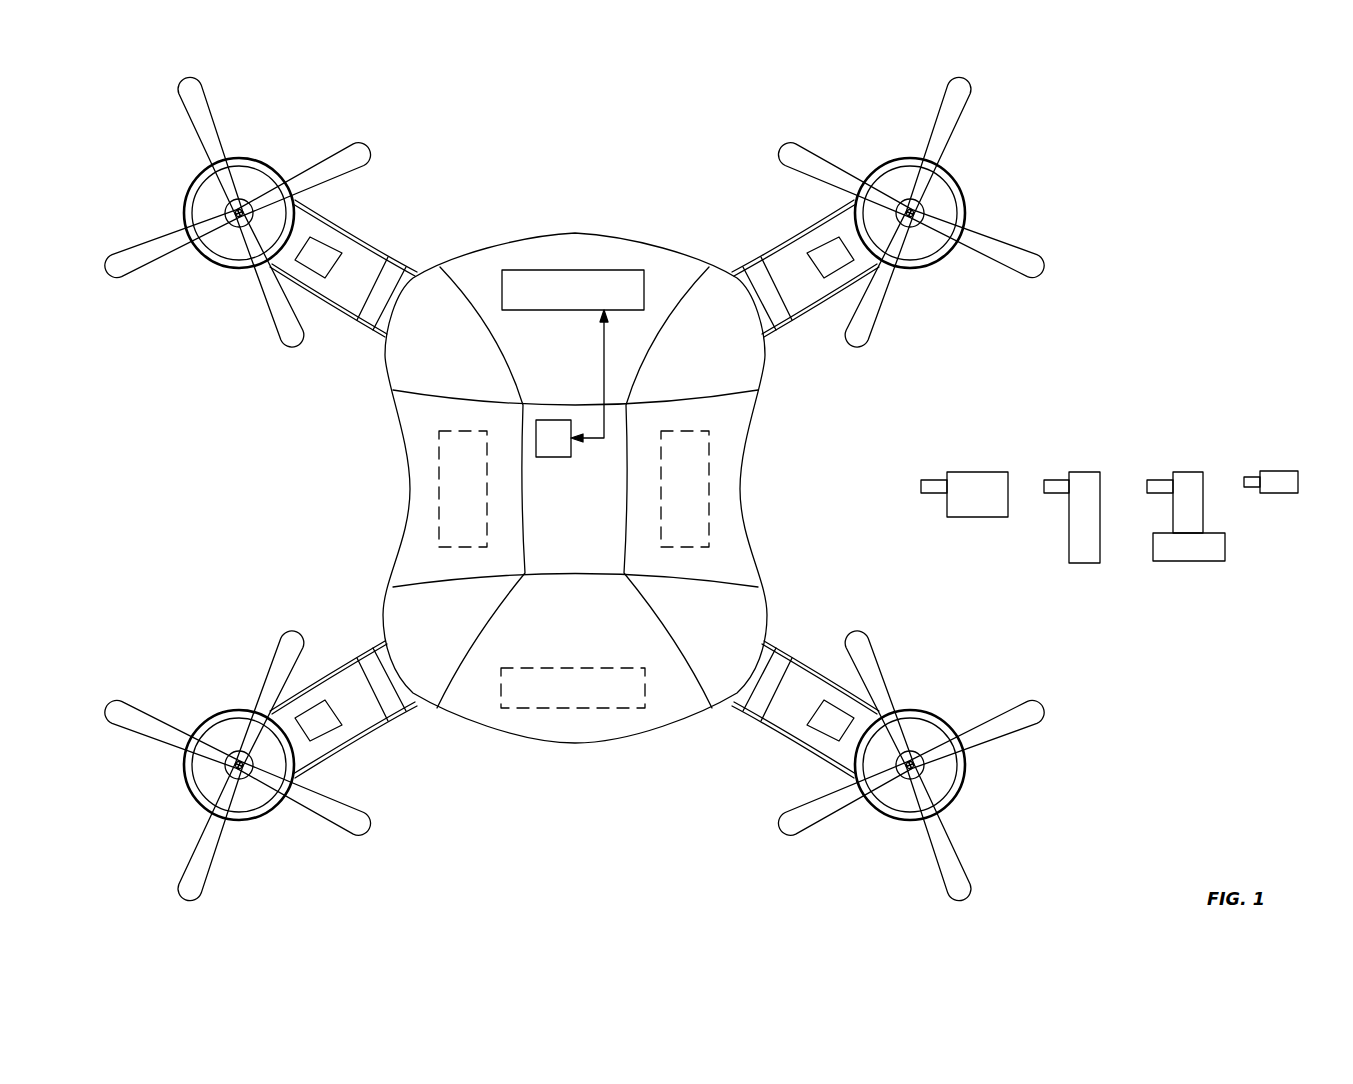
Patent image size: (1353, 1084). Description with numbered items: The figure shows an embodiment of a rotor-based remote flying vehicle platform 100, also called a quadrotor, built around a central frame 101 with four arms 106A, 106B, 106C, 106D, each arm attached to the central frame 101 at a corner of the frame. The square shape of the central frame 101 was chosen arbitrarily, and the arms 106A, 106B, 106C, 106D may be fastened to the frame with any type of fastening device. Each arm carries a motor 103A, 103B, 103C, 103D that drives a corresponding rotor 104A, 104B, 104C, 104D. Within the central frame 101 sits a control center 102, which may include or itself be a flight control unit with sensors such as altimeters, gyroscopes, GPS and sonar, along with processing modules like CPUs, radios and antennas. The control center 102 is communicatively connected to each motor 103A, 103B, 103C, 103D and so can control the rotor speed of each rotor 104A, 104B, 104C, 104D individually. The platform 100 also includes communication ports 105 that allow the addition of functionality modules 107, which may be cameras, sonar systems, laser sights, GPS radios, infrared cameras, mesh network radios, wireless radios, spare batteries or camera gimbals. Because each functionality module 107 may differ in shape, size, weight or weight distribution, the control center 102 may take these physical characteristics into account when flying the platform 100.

The rotor-based remote flying vehicle platform 100 is at (1050, 138).
The central frame 101 is at (547, 552).
The control center 102 is at (550, 450).
The motor 103A is at (320, 252).
The motor 103B is at (818, 275).
The motor 103C is at (320, 724).
The motor 103D is at (828, 708).
The rotor 104A is at (243, 200).
The rotor 104B is at (918, 210).
The rotor 104C is at (243, 778).
The rotor 104D is at (918, 768).
The communication port 105 is at (552, 270).
The arm 106A is at (337, 312).
The arm 106B is at (784, 243).
The arm 106C is at (338, 666).
The arm 106D is at (784, 736).
The functionality modules 107 is at (1312, 445).